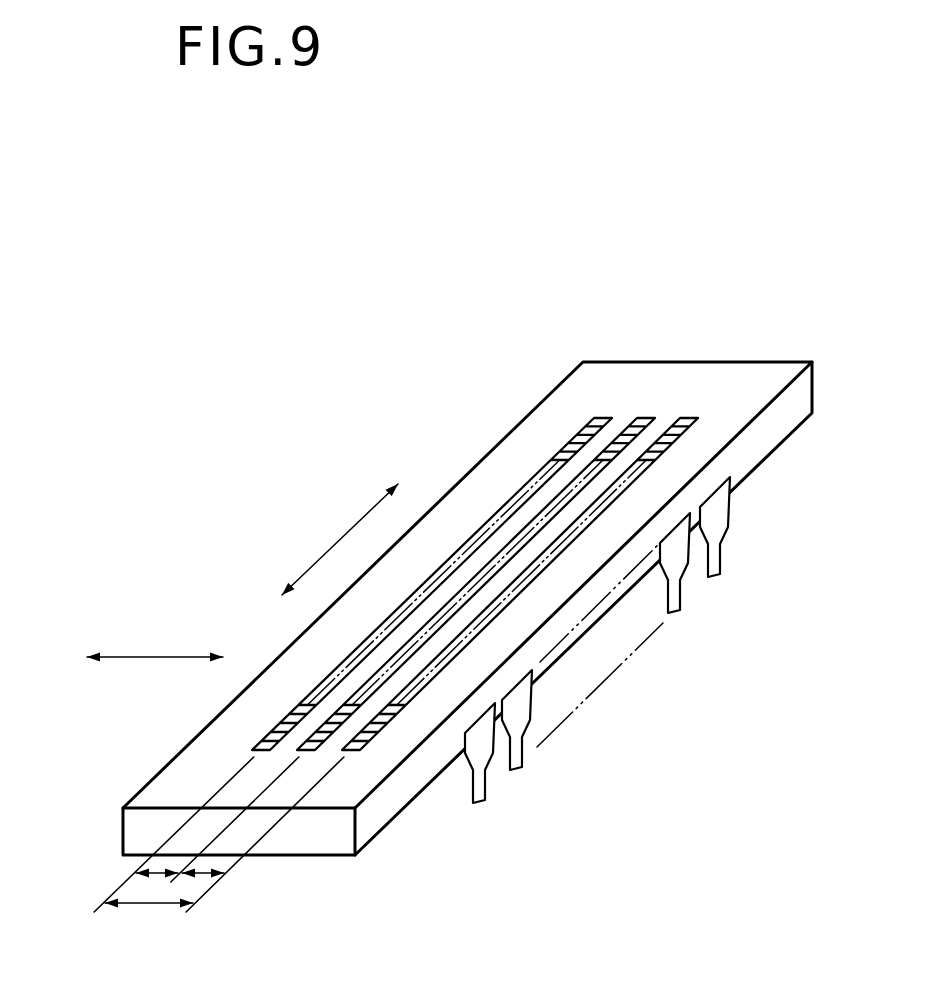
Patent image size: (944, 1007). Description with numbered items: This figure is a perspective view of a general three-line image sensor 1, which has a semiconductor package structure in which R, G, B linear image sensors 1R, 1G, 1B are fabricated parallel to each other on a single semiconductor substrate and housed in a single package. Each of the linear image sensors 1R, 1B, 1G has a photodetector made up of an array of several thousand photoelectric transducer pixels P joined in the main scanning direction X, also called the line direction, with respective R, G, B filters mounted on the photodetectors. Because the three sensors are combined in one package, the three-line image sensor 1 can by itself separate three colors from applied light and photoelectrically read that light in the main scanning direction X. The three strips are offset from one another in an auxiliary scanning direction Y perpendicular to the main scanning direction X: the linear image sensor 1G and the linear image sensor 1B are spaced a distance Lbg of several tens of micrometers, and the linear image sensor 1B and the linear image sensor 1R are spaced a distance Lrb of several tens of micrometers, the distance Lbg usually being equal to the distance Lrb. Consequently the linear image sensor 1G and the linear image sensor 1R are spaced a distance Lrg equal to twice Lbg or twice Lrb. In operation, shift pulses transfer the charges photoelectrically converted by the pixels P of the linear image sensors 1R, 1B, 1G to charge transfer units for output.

The 3-line image sensor 1 is at (501, 191).
The R linear image sensor 1R is at (591, 417).
The B linear image sensor 1B is at (647, 417).
The G linear image sensor 1G is at (688, 417).
The photoelectric transducer pixels P is at (563, 441).
The main scanning direction X is at (340, 539).
The auxiliary scanning direction Y is at (155, 636).
The distance between linear image sensors 1B and 1R Lrb is at (150, 873).
The distance between linear image sensors 1G and 1B Lbg is at (208, 875).
The distance between linear image sensors 1G and 1R Lrg is at (157, 905).